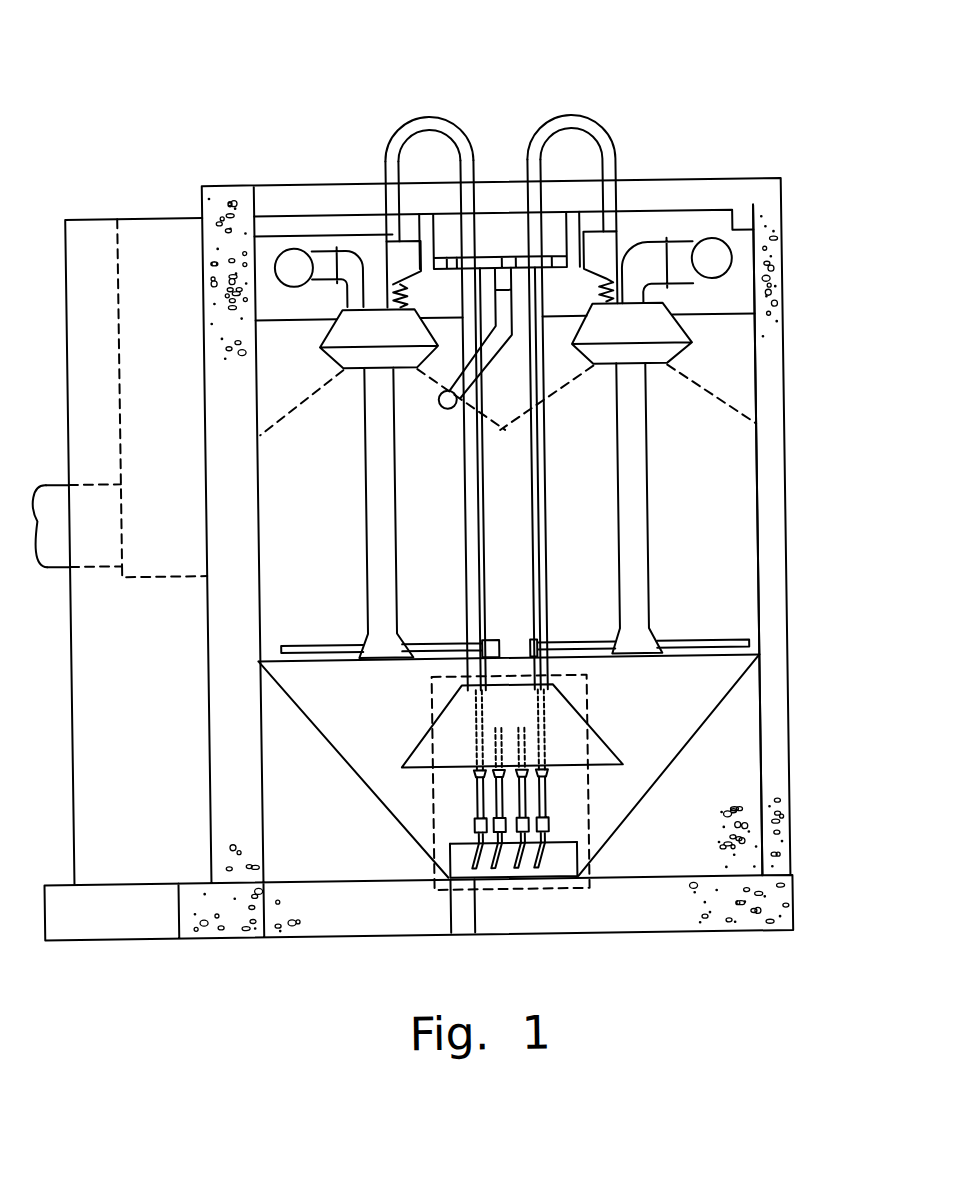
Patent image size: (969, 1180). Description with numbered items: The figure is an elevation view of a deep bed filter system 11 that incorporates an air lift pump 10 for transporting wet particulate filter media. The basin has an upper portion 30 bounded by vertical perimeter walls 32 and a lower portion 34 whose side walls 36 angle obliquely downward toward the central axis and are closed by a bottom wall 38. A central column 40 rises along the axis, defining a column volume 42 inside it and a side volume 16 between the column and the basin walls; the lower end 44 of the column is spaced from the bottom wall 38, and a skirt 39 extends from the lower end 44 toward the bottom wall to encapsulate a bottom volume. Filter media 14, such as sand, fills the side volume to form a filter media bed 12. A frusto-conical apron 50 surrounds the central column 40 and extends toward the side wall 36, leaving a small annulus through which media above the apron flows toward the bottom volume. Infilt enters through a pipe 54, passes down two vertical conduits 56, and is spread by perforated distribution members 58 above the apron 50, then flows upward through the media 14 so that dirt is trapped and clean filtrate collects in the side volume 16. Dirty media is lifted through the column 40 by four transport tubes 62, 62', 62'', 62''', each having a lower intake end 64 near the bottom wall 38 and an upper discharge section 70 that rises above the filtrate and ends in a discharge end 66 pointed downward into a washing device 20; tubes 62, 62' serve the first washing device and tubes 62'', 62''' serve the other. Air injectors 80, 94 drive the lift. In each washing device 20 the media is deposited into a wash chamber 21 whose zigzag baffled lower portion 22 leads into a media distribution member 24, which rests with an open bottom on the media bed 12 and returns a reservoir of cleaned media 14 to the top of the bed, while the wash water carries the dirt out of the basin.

The air lift pump 10 is at (581, 101).
The deep bed filter system 11 is at (185, 142).
The filter media bed 12 is at (684, 457).
The filter media 14 is at (276, 592).
The side volume 16 is at (297, 451).
The washing device 20 is at (415, 199).
The wash chamber 21 is at (607, 254).
The baffled lower portion 22 is at (649, 294).
The media distribution member 24 is at (648, 338).
The upper portion 30 is at (739, 509).
The perimeter wall 32 is at (757, 553).
The lower portion 34 is at (698, 708).
The side wall 36 is at (684, 751).
The bottom wall 38 is at (556, 878).
The skirt 39 is at (443, 932).
The central column 40 is at (463, 503).
The column volume 42 is at (495, 542).
The lower end 44 is at (558, 839).
The frusto-conical apron 50 is at (420, 736).
The pipe 54 is at (731, 255).
The vertical conduit 56 is at (645, 389).
The distribution member 58 is at (712, 640).
The transport tube 62 is at (404, 767).
The transport tube 62' is at (416, 797).
The transport tube 62'' is at (605, 794).
The transport tube 62''' is at (627, 765).
The intake end 64 is at (489, 853).
The discharge end 66 is at (397, 236).
The upper discharge section 70 is at (438, 117).
The air injector 80 is at (496, 846).
The air injector 94 is at (475, 766).